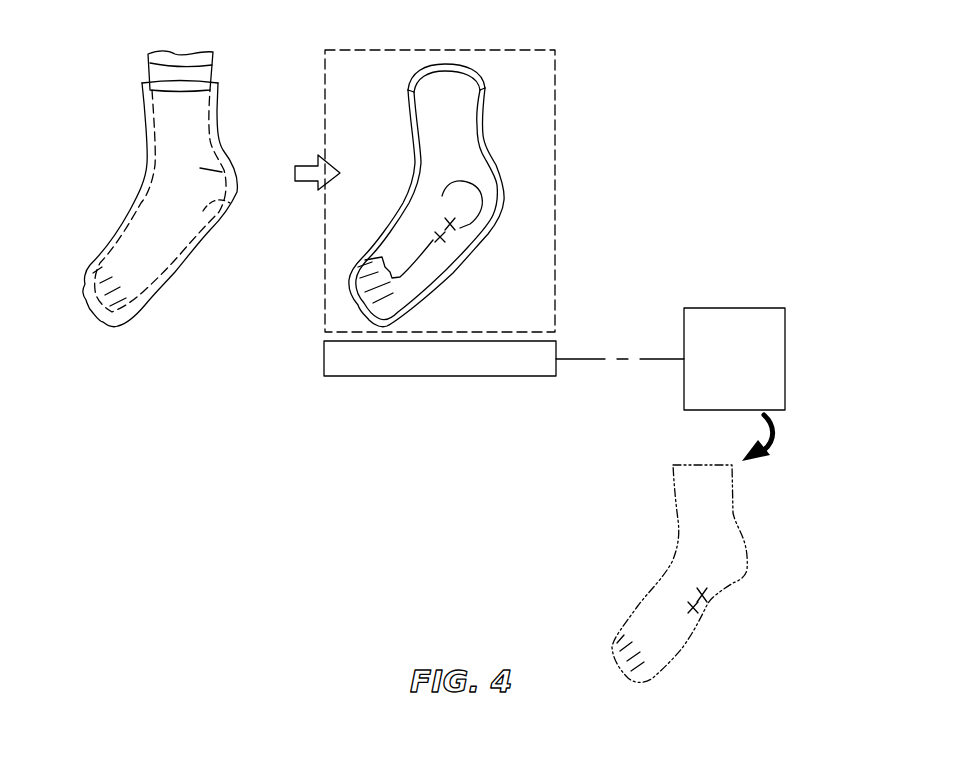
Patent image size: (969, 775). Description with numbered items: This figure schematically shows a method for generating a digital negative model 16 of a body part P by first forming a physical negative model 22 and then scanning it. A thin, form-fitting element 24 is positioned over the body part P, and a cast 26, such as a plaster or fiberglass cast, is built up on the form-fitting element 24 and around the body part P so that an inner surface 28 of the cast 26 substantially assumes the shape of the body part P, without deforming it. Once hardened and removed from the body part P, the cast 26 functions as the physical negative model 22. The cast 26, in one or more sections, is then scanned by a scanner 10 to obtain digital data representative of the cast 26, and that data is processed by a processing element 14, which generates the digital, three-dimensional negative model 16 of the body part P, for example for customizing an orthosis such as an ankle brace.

The scanner 10 is at (463, 333).
The processing element 14 is at (748, 373).
The digital negative model 16 is at (750, 505).
The physical negative model 22 is at (168, 173).
The form-fitting element 24 is at (202, 73).
The cast 26 is at (218, 138).
The inner surface 28 is at (217, 223).
The body part P is at (192, 169).